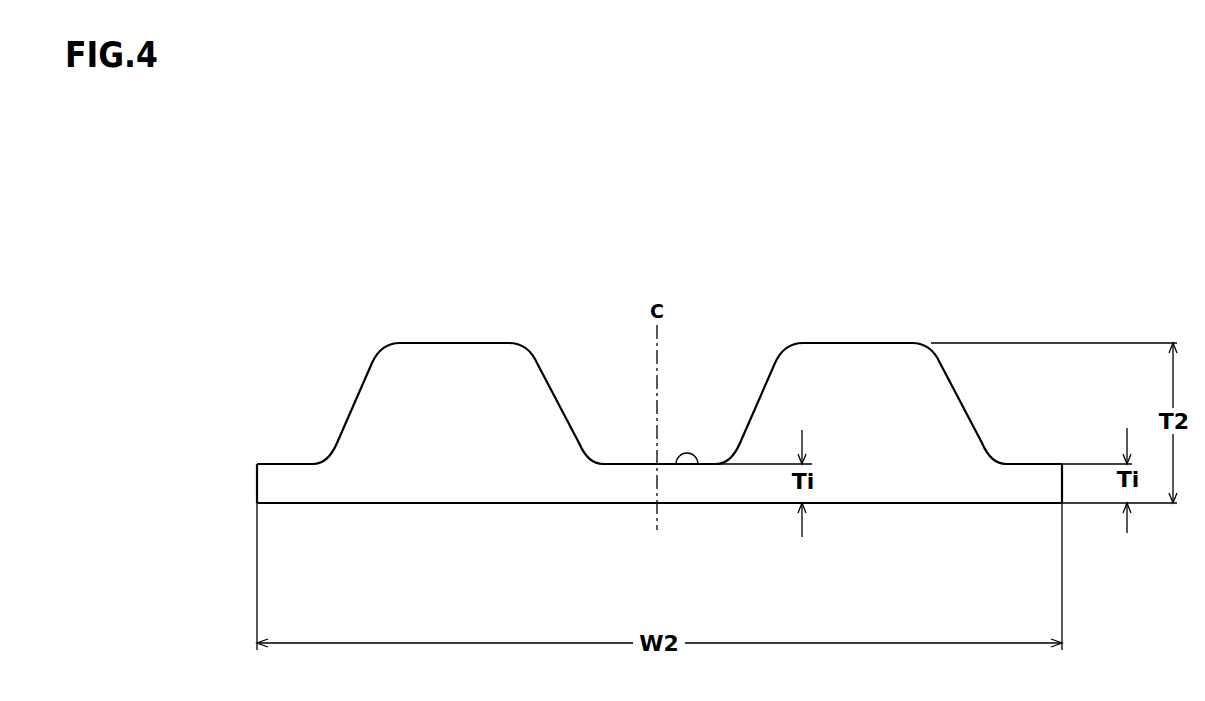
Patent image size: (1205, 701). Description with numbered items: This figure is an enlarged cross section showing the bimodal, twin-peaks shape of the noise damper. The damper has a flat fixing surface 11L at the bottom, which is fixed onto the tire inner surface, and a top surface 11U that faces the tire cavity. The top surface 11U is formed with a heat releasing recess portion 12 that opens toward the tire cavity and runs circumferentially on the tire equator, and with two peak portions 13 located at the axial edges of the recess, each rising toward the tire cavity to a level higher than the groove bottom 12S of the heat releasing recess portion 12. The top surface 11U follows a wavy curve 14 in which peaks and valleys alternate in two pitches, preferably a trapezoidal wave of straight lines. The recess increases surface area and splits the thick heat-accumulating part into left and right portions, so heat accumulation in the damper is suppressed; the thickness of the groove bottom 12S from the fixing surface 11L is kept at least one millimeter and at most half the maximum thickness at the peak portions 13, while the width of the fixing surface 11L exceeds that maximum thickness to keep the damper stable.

The top surface 11U is at (485, 343).
The wavy curve 14 is at (659, 356).
The peak portion 13 is at (435, 370).
The heat releasing recess portion 12 is at (708, 405).
The groove bottom 12S is at (699, 466).
The fixing surface 11L is at (940, 504).